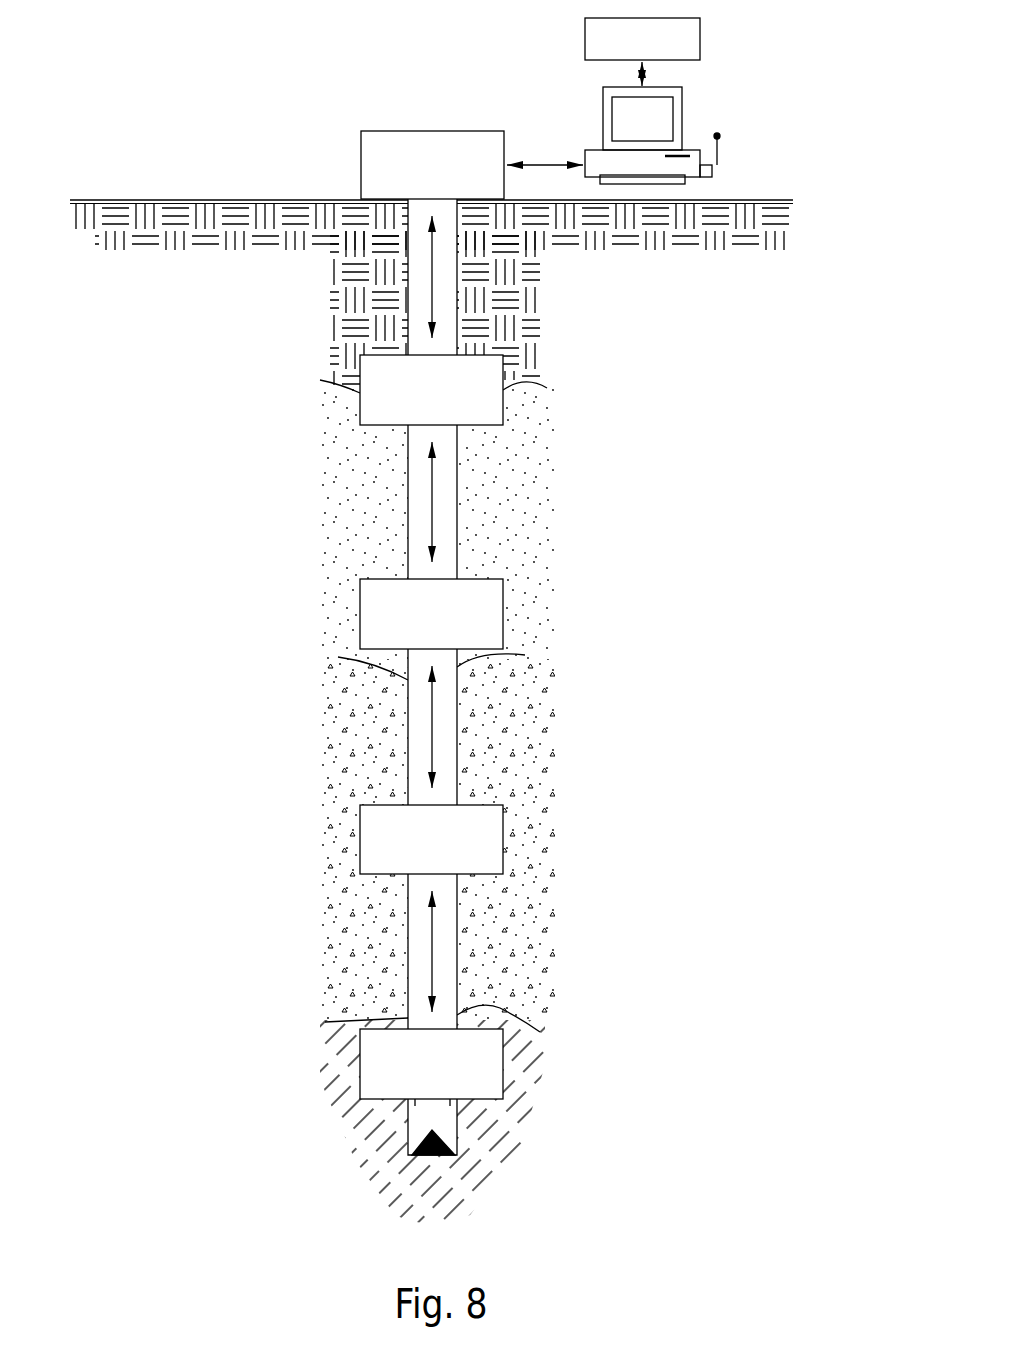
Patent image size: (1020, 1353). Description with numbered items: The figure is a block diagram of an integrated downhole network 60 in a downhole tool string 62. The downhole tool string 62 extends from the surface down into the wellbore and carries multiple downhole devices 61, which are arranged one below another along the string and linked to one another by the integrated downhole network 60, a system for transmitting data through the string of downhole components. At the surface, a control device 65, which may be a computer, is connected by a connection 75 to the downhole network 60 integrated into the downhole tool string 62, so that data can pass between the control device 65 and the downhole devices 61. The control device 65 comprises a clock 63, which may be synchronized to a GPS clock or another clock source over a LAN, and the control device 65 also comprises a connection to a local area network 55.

The local area network 55 is at (703, 173).
The integrated downhole network 60 is at (420, 316).
The downhole device 61 is at (370, 180).
The downhole tool string 62 is at (412, 228).
The clock 63 is at (688, 42).
The control device 65 is at (658, 113).
The connection 75 is at (545, 163).